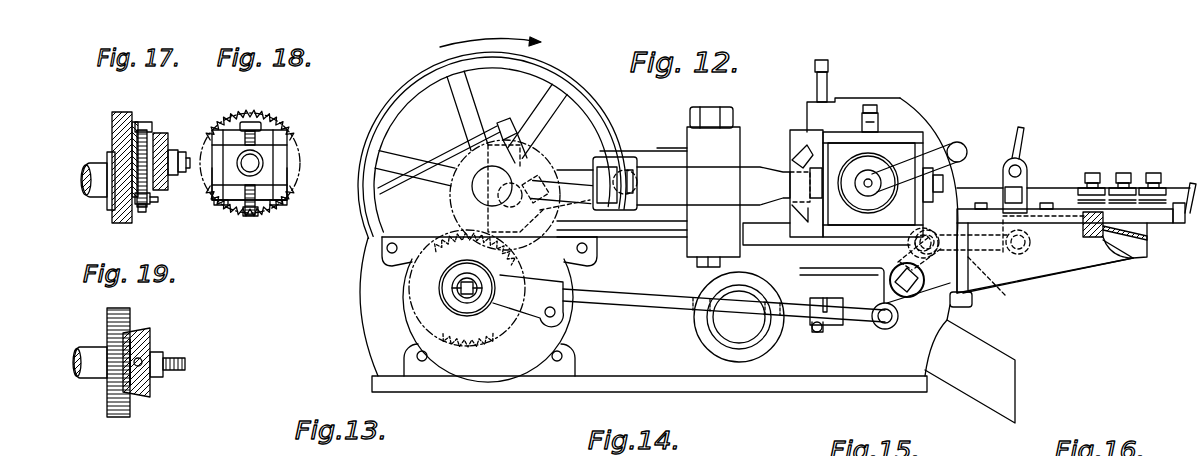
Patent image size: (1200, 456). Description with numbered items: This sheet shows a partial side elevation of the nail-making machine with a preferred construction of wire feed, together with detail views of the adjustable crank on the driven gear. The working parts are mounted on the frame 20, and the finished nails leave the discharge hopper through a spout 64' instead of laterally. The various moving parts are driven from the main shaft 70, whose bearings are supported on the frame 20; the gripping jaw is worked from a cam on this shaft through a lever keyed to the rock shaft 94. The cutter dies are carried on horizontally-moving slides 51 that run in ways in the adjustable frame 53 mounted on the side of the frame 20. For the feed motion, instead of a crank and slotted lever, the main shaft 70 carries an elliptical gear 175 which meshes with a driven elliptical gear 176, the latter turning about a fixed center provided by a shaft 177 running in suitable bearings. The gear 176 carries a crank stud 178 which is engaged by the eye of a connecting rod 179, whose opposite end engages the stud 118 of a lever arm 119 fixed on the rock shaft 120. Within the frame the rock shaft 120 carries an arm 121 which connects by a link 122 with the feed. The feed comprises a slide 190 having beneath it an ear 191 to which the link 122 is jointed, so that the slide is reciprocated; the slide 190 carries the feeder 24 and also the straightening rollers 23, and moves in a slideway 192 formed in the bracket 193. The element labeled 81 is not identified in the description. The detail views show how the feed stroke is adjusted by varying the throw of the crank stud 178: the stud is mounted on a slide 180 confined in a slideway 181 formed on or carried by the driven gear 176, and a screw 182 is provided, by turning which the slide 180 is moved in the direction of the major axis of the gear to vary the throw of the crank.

In FIG. 12, the frame 20 is at (659, 245).
In FIG. 12, the straightening rollers 23 is at (1168, 190).
In FIG. 12, the feeder 24 is at (1030, 170).
In FIG. 12, the slides 51 is at (798, 152).
In FIG. 12, the adjustable frame 53 is at (800, 137).
In FIG. 12, the spout 64' is at (970, 371).
In FIG. 12, the main shaft 70 is at (457, 177).
In FIG. 12, the connecting rod 81 is at (683, 187).
In FIG. 12, the rock shaft 94 is at (757, 327).
In FIG. 12, the stud 118 is at (882, 324).
In FIG. 12, the lever arm 119 is at (903, 299).
In FIG. 12, the rock shaft 120 is at (965, 307).
In FIG. 12, the arm 121 is at (1004, 286).
In FIG. 12, the link 122 is at (1043, 256).
In FIG. 12, the elliptical gear 175 is at (458, 217).
In FIG. 17, the elliptical gear 176 is at (122, 112).
In FIG. 18, the elliptical gear 176 is at (287, 217).
In FIG. 19, the elliptical gear 176 is at (120, 418).
In FIG. 12, the elliptical gear 176 is at (505, 253).
In FIG. 17, the shaft 177 is at (95, 167).
In FIG. 19, the shaft 177 is at (83, 353).
In FIG. 12, the shaft 177 is at (493, 310).
In FIG. 18, the crank stud 178 is at (258, 163).
In FIG. 19, the crank stud 178 is at (158, 350).
In FIG. 12, the crank stud 178 is at (452, 289).
In FIG. 17, the connecting rod 179 is at (153, 137).
In FIG. 12, the connecting rod 179 is at (458, 268).
In FIG. 18, the slide 180 is at (222, 145).
In FIG. 19, the slide 180 is at (140, 388).
In FIG. 18, the slideway 181 is at (287, 180).
In FIG. 19, the slideway 181 is at (137, 338).
In FIG. 17, the screw 182 is at (150, 205).
In FIG. 18, the screw 182 is at (255, 137).
In FIG. 19, the screw 182 is at (147, 348).
In FIG. 12, the slide 190 is at (1162, 222).
In FIG. 12, the ear 191 is at (989, 243).
In FIG. 12, the slideway 192 is at (1122, 258).
In FIG. 12, the bracket 193 is at (1073, 268).